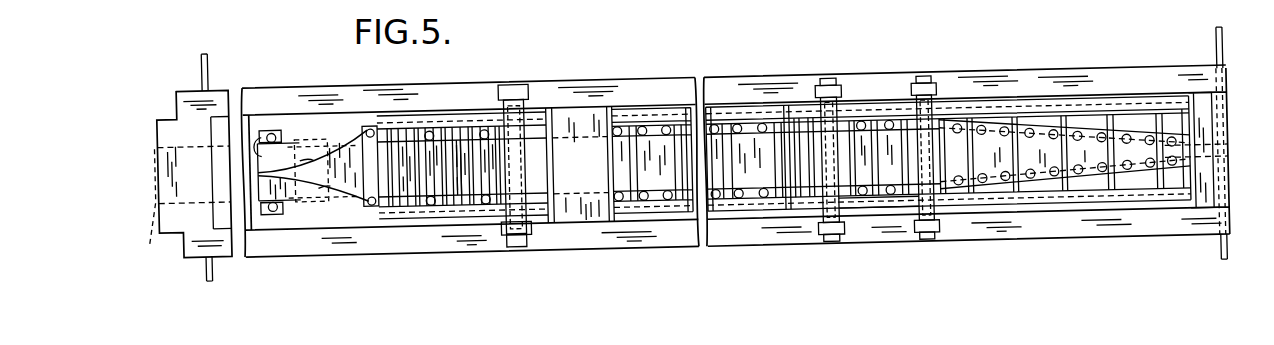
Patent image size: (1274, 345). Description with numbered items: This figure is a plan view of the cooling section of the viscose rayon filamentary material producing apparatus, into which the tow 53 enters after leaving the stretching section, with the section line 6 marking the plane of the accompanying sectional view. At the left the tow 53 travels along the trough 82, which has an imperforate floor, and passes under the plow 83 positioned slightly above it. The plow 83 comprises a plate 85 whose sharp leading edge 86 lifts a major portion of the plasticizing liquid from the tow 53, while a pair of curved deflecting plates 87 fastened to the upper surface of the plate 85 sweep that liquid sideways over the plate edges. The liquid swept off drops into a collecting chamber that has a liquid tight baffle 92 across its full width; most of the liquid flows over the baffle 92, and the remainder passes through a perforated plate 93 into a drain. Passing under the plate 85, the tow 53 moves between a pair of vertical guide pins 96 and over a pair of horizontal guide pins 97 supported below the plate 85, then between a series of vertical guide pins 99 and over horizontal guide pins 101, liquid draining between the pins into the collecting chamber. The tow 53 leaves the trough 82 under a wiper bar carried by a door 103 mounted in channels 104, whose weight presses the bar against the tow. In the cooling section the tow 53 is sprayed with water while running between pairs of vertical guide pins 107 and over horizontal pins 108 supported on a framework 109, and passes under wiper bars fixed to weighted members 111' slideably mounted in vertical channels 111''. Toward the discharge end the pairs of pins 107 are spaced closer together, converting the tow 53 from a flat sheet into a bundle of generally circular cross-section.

The section line 6- 6 is at (149, 190).
The tow 53 is at (1236, 211).
The trough 82 is at (188, 203).
The plow 83 is at (347, 199).
The plate 85 is at (262, 183).
The sharp leading edge 86 is at (252, 148).
The curved deflecting plates 87 is at (312, 162).
The baffle 92 is at (556, 178).
The perforated plate 93 is at (590, 220).
The vertical guide pins 96 is at (273, 133).
The horizontal guide pins 97 is at (328, 141).
The vertical guide pins 99 is at (483, 136).
The horizontal guide pins 101 is at (460, 205).
The door 103 is at (519, 122).
The channels 104 is at (514, 105).
The vertical guide pins 107 is at (667, 135).
The horizontal pins 108 is at (688, 173).
The framework 109 is at (811, 216).
The weighted members 111' is at (880, 233).
The vertical channels 111'' is at (884, 164).